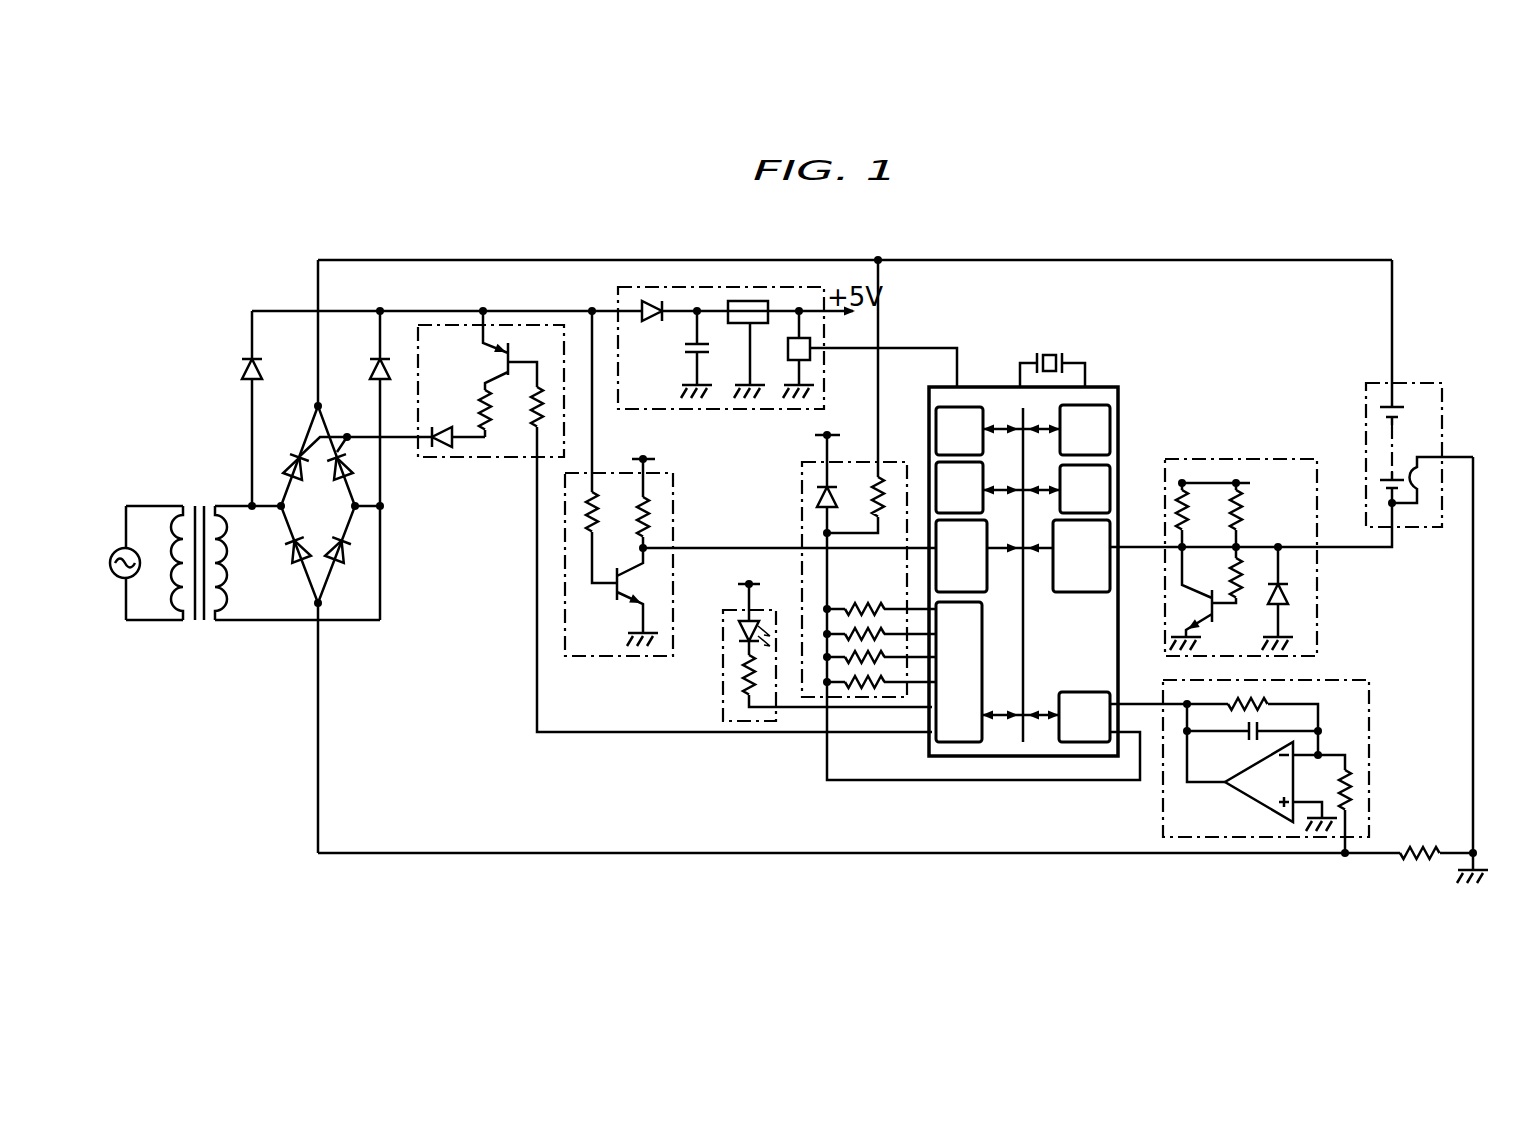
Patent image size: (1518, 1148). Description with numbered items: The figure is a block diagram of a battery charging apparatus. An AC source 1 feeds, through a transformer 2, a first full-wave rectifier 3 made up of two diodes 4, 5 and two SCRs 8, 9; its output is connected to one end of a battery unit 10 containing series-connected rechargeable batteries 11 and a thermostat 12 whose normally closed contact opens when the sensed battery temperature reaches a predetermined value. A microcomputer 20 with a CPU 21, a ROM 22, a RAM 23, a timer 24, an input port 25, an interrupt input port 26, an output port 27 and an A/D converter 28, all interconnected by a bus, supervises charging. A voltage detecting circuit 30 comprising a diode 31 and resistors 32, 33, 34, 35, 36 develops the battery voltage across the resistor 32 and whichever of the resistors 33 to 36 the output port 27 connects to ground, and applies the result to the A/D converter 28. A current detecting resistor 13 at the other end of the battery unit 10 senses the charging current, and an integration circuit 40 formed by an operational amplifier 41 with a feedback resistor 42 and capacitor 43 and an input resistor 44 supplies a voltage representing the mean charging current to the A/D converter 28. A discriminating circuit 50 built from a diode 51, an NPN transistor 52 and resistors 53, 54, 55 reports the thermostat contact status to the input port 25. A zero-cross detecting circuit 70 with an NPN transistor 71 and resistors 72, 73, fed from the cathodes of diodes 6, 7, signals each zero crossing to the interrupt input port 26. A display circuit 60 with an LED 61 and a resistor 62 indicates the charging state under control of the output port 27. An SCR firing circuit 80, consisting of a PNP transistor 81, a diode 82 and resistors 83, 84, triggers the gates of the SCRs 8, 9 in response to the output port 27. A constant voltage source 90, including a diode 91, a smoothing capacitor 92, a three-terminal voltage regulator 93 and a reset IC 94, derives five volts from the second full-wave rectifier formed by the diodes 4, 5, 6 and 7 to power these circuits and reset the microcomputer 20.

The AC source 1 is at (116, 575).
The transformer 2 is at (200, 624).
The first full-wave rectifier 3 is at (327, 516).
The diode 4 is at (290, 550).
The diode 5 is at (345, 552).
The diode 6 is at (242, 372).
The diode 7 is at (370, 372).
The SCR 8 is at (289, 460).
The SCR 9 is at (348, 466).
The battery unit 10 is at (1424, 383).
The rechargeable batteries 11 is at (1397, 450).
The thermostat 12 is at (1425, 485).
The current detecting resistor 13 is at (1418, 860).
The microcomputer 20 is at (1122, 388).
The CPU 21 is at (1112, 414).
The ROM 22 is at (1112, 492).
The RAM 23 is at (936, 428).
The timer 24 is at (936, 487).
The input port 25 is at (1105, 575).
The interrupt input port 26 is at (987, 572).
The output port 27 is at (982, 635).
The A/D converter 28 is at (1090, 692).
The voltage detecting circuit 30 is at (802, 482).
The diode 31 is at (816, 497).
The resistor 32 is at (876, 500).
The resistor 33 is at (853, 606).
The resistor 34 is at (872, 630).
The resistor 35 is at (867, 662).
The resistor 36 is at (878, 687).
The integration circuit 40 is at (1370, 698).
The operational amplifier 41 is at (1258, 806).
The resistor 42 is at (1263, 700).
The capacitor 43 is at (1260, 722).
The resistor 44 is at (1347, 800).
The thermostat-contact on/off discriminating circuit 50 is at (1293, 459).
The diode 51 is at (1289, 595).
The NPN transistor 52 is at (1205, 625).
The resistor 53 is at (1248, 506).
The resistor 54 is at (1240, 585).
The resistor 55 is at (1188, 520).
The display circuit 60 is at (723, 645).
The LED 61 is at (740, 630).
The resistor 62 is at (740, 690).
The zero-cross detecting circuit 70 is at (580, 656).
The NPN transistor 71 is at (613, 587).
The resistor 72 is at (590, 518).
The resistor 73 is at (648, 512).
The SCR firing circuit 80 is at (445, 457).
The PNP transistor 81 is at (492, 355).
The diode 82 is at (444, 432).
The resistor 83 is at (482, 398).
The resistor 84 is at (533, 412).
The constant voltage source 90 is at (720, 287).
The diode 91 is at (650, 322).
The smoothing capacitor 92 is at (688, 356).
The three-terminal voltage regulator 93 is at (745, 323).
The reset IC 94 is at (811, 352).